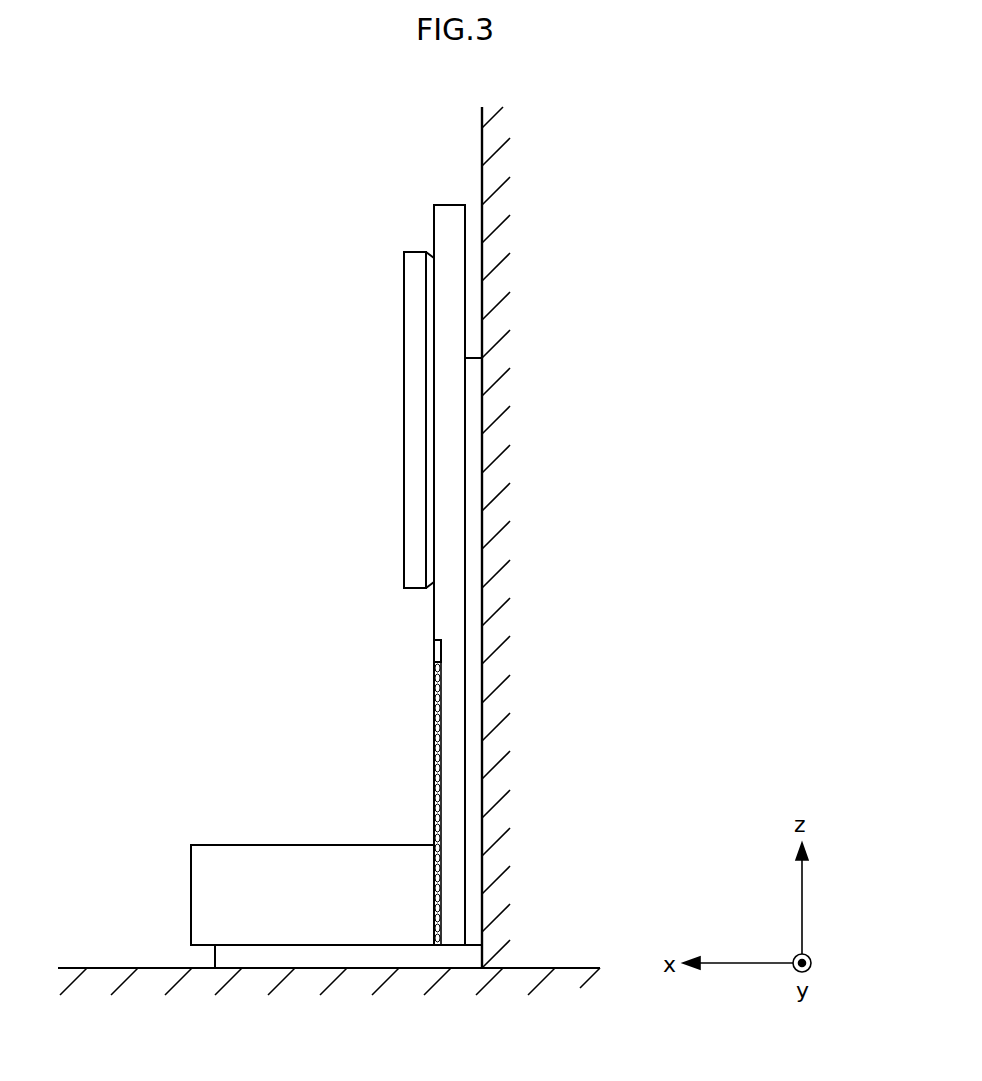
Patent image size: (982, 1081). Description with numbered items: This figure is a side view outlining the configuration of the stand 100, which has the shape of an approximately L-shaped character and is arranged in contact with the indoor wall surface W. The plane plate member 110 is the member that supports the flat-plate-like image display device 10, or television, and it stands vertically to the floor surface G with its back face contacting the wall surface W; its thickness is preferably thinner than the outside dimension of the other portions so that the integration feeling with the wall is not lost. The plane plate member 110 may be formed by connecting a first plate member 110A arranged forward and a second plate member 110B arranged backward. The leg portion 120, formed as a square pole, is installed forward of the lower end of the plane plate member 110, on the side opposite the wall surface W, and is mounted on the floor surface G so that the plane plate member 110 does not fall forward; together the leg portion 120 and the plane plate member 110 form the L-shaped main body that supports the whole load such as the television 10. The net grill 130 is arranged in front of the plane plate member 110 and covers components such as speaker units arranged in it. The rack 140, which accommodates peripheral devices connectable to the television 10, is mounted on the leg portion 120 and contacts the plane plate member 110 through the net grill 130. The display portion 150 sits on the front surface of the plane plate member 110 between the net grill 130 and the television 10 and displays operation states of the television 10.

The stand 100 is at (305, 244).
The image display device 10 is at (413, 327).
The wall surface W is at (482, 148).
The floor surface G is at (103, 967).
The plane plate member 110 is at (620, 372).
The first plate member 110A is at (459, 388).
The second plate member 110B is at (483, 450).
The leg portion 120 is at (313, 958).
The net grill 130 is at (434, 727).
The rack 140 is at (242, 848).
The display portion 150 is at (434, 650).